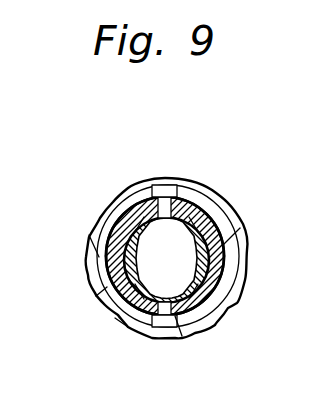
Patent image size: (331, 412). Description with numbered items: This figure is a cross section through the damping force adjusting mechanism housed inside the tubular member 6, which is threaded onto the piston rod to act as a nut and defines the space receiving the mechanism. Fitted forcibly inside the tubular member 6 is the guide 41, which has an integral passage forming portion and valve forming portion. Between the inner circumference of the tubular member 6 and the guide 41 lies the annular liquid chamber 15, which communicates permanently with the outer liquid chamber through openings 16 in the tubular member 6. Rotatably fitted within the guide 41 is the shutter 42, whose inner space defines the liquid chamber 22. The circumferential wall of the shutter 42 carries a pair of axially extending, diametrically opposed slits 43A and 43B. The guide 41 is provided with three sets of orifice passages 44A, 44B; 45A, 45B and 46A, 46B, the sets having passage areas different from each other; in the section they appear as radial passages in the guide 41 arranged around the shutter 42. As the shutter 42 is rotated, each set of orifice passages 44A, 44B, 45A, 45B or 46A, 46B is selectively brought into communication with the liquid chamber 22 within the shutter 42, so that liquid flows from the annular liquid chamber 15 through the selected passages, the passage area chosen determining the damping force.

The tubular member 6 is at (127, 336).
The annular liquid chamber 15 is at (114, 316).
The openings 16 is at (176, 188).
The liquid chamber 22 is at (135, 258).
The guide 41 is at (140, 199).
The shutter 42 is at (222, 263).
The slit 43A is at (206, 206).
The slit 43B is at (193, 316).
The orifice passage 44A is at (162, 198).
The orifice passage 44B is at (163, 318).
The orifice passage 45A is at (232, 238).
The orifice passage 45B is at (108, 285).
The orifice passage 46A is at (222, 306).
The orifice passage 46B is at (128, 220).